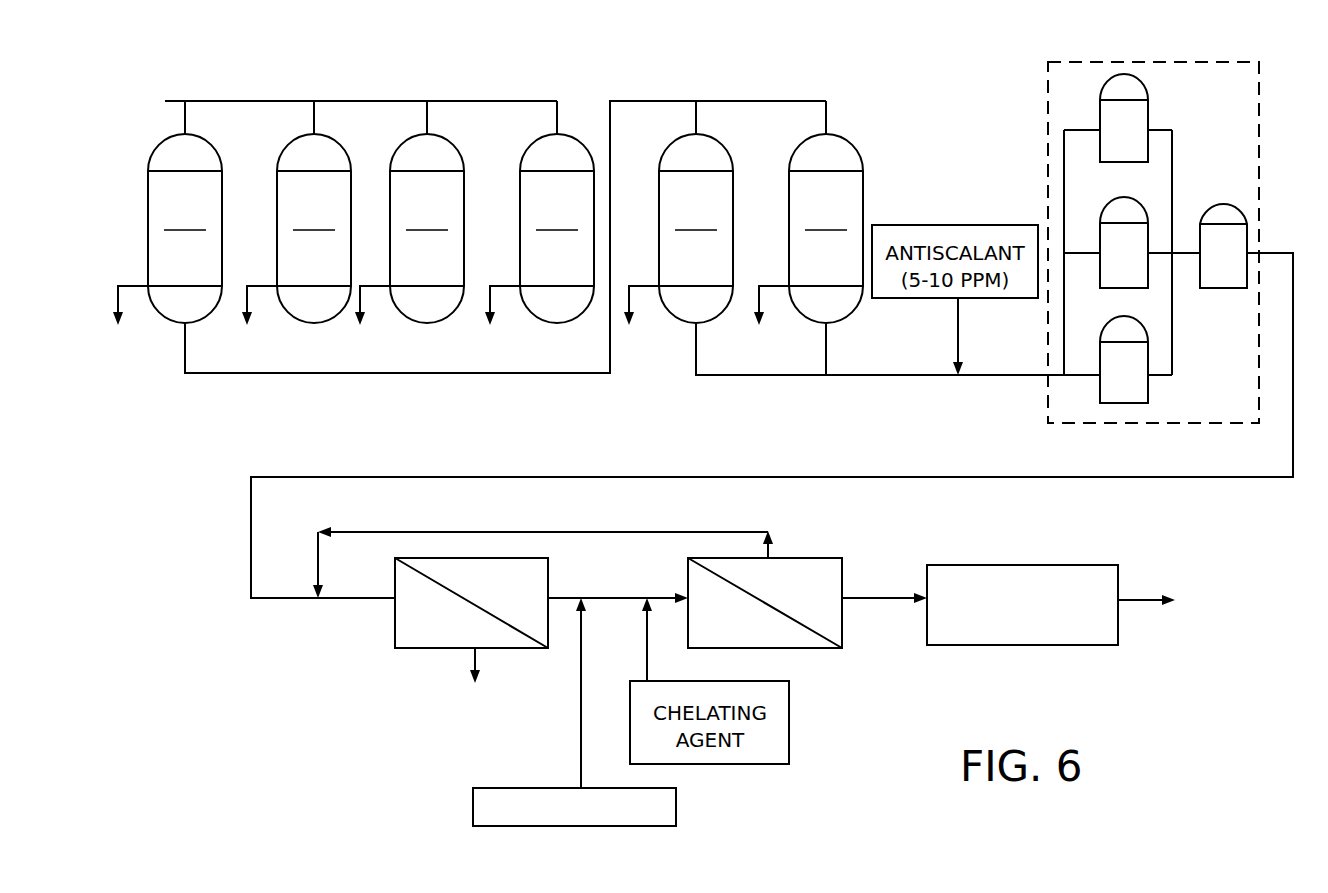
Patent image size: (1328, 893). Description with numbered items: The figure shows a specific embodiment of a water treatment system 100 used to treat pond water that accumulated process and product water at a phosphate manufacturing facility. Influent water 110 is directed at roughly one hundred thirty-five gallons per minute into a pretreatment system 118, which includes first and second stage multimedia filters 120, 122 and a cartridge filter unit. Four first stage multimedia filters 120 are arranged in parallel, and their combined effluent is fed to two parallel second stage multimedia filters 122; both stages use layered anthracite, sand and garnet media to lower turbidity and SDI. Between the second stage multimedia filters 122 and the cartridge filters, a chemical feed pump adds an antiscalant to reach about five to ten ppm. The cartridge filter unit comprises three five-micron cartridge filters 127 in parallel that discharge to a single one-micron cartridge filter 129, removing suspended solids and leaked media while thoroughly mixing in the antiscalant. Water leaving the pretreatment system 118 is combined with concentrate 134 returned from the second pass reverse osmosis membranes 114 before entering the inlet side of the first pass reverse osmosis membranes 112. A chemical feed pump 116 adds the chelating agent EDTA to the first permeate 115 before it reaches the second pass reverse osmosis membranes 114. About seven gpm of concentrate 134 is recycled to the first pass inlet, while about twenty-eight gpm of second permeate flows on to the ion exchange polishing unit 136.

The system 100 is at (171, 595).
The influent water 110 is at (153, 101).
The first pass reverse osmosis membranes 112 is at (418, 648).
The second pass reverse osmosis membranes 114 is at (795, 650).
The first permeate 115 is at (597, 597).
The chemical feed pump 116 is at (676, 812).
The pretreatment system 118 is at (652, 68).
The first stage multimedia filters 120 is at (353, 229).
The second stage multimedia filters 122 is at (844, 254).
The cartridge filters 127 is at (1148, 112).
The cartridge filter 129 is at (1247, 237).
The concentrate 134 is at (707, 531).
The ion exchange polishing unit 136 is at (980, 645).